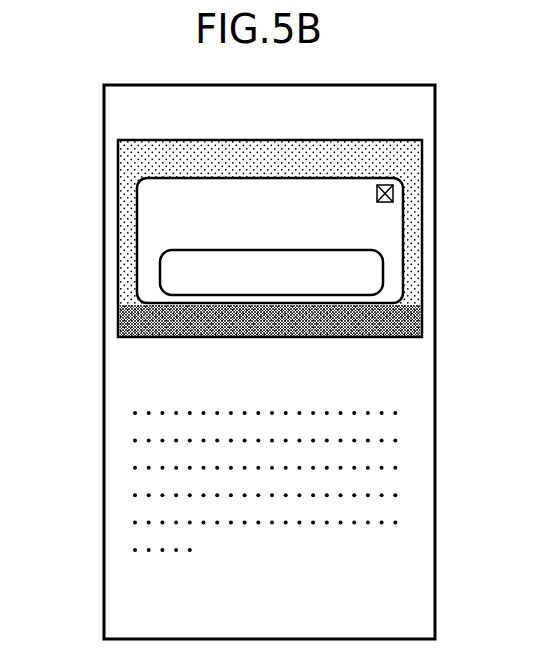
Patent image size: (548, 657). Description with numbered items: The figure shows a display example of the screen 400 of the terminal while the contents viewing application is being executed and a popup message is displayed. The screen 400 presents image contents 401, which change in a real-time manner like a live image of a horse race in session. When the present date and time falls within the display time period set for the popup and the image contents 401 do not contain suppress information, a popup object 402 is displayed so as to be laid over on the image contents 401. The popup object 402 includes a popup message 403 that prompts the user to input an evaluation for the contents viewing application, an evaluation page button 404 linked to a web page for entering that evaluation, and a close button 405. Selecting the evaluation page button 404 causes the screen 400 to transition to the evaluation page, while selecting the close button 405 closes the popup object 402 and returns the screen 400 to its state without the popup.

The screen 400 is at (145, 83).
The image contents 401 is at (119, 171).
The popup object 402 is at (403, 194).
The popup message 403 is at (156, 218).
The evaluation page button 404 is at (161, 276).
The close button 405 is at (385, 203).